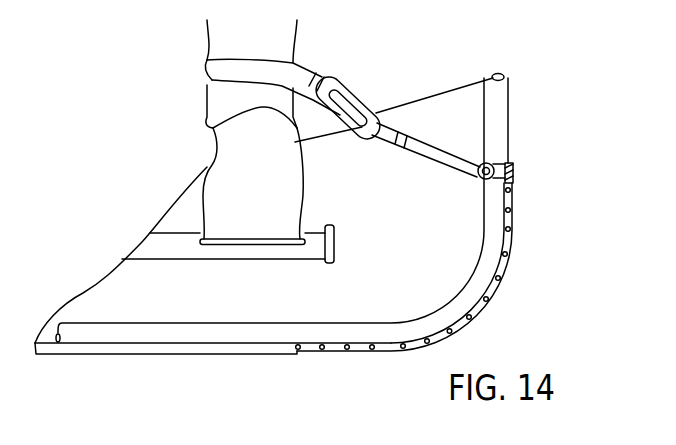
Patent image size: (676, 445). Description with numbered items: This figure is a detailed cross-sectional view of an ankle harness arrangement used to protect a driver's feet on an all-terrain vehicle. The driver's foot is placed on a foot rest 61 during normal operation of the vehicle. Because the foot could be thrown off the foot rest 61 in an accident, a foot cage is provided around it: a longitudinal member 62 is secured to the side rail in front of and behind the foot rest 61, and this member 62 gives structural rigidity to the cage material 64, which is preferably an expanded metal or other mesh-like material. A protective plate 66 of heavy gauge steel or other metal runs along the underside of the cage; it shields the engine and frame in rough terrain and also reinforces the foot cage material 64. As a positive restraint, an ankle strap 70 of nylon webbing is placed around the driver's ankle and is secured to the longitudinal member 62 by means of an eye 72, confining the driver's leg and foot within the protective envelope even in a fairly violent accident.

The foot rest 61 is at (182, 250).
The longitudinal member 62 is at (513, 181).
The cage material 64 is at (484, 296).
The protective plate 66 is at (216, 347).
The ankle strap 70 is at (424, 152).
The eye 72 is at (496, 162).